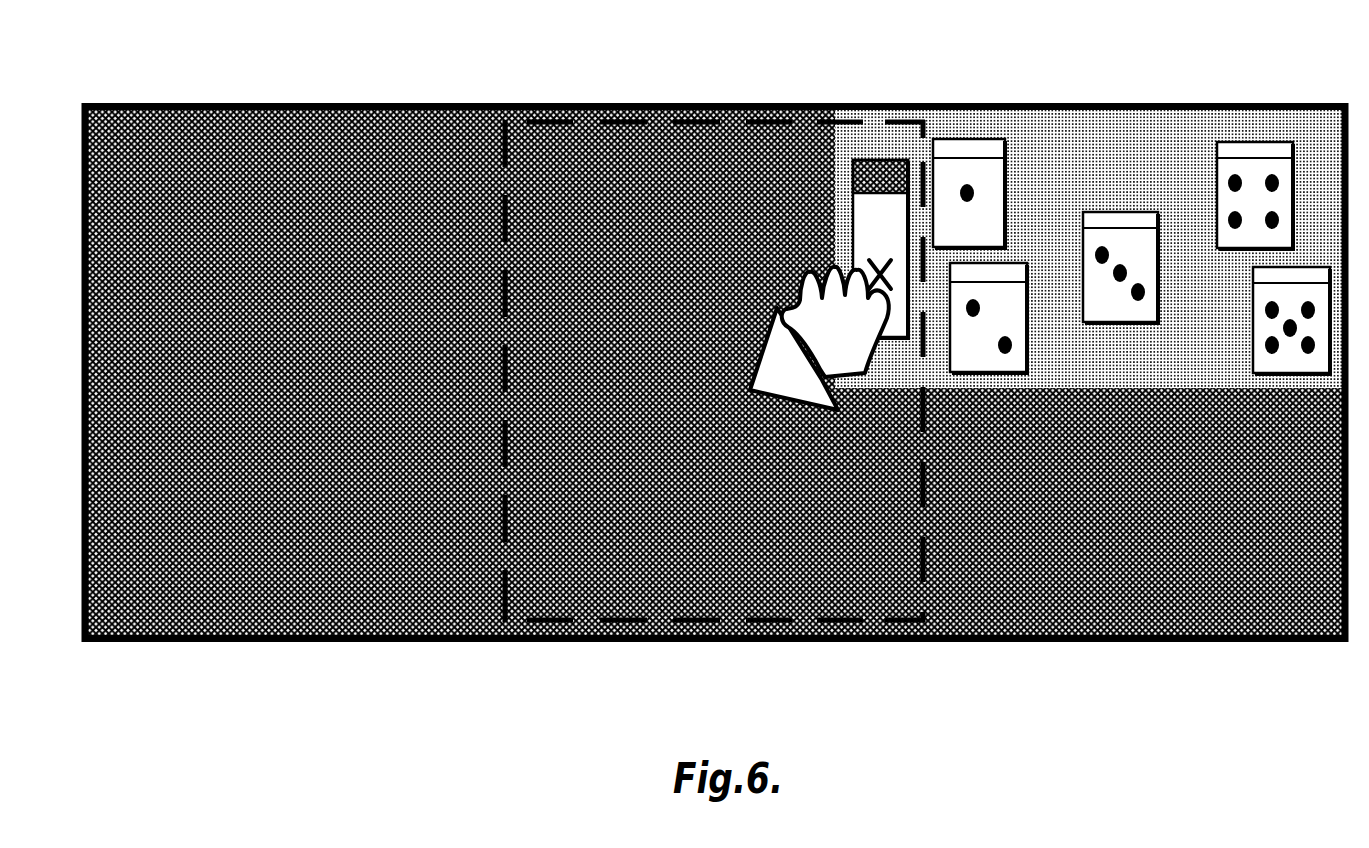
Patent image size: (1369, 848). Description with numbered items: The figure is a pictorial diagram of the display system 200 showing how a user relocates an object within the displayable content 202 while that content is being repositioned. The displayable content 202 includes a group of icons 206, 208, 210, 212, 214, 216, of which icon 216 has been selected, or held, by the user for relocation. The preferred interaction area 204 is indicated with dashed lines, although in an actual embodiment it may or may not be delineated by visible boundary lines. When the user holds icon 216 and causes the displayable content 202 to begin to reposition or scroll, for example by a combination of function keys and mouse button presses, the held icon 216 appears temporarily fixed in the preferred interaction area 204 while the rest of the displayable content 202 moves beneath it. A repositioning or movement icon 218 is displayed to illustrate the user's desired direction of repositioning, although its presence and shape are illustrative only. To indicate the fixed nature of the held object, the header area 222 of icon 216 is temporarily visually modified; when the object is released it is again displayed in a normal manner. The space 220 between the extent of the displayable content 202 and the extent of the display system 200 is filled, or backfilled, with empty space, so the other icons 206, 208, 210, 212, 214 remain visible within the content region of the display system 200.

The display system 200 is at (263, 103).
The displayable content 202 is at (1058, 140).
The preferred interaction area 204 is at (710, 103).
The icon 206 is at (976, 139).
The icon 208 is at (990, 374).
The icon 210 is at (1118, 212).
The icon 212 is at (1243, 142).
The icon 214 is at (1293, 376).
The icon 216 is at (857, 184).
The movement icon 218 is at (860, 378).
The space 220 is at (262, 548).
The header area 222 is at (846, 160).